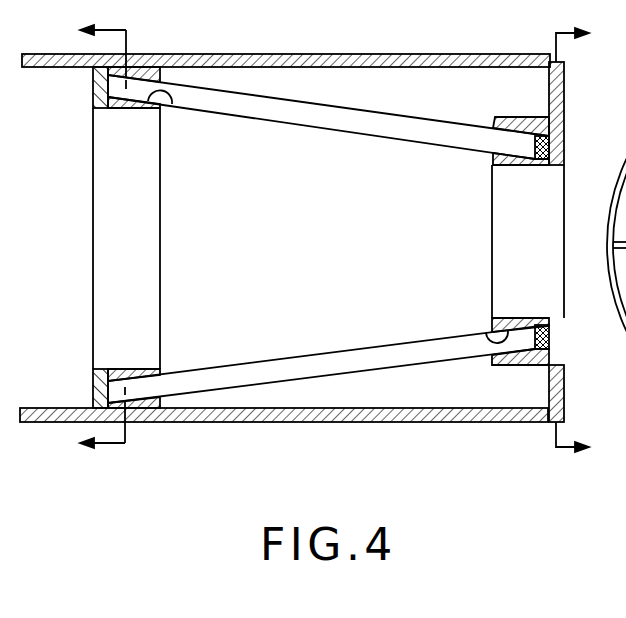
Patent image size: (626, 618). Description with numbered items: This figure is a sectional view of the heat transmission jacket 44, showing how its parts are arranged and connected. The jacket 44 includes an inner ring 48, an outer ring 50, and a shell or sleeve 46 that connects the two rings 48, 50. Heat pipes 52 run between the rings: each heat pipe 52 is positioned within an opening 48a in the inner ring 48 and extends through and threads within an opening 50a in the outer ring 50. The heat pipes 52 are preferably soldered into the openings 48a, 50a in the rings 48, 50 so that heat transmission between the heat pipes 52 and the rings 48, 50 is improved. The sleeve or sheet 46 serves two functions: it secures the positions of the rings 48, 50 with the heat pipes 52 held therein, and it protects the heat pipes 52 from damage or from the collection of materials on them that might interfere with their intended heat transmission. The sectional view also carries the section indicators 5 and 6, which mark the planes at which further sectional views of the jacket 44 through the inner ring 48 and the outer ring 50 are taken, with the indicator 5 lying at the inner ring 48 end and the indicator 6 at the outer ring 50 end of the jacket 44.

The heat transmission jacket 44 is at (285, 218).
The outer sleeve 46 is at (224, 54).
The inner ring 48 is at (94, 93).
The openings in inner ring 48a is at (172, 104).
The outer ring 50 is at (566, 84).
The openings in outer ring 50a is at (489, 333).
The heat pipes 52 is at (407, 115).
The section line 5- 5 is at (92, 239).
The section line 6- 6 is at (583, 244).